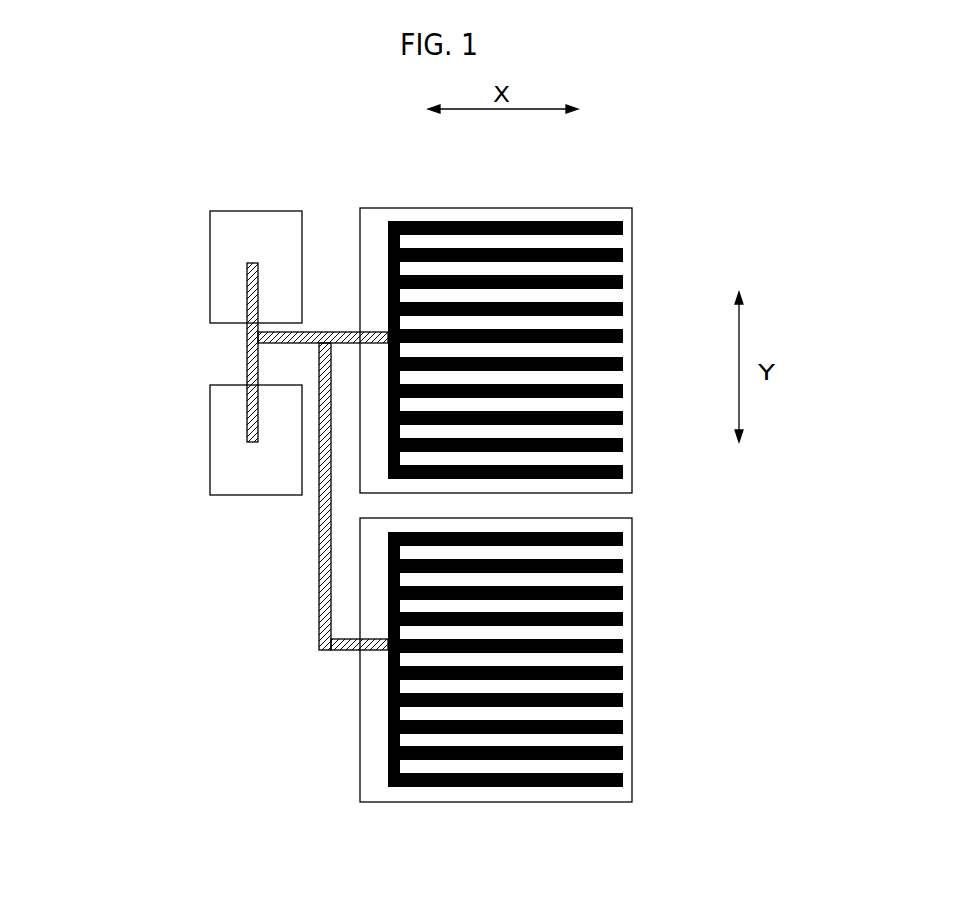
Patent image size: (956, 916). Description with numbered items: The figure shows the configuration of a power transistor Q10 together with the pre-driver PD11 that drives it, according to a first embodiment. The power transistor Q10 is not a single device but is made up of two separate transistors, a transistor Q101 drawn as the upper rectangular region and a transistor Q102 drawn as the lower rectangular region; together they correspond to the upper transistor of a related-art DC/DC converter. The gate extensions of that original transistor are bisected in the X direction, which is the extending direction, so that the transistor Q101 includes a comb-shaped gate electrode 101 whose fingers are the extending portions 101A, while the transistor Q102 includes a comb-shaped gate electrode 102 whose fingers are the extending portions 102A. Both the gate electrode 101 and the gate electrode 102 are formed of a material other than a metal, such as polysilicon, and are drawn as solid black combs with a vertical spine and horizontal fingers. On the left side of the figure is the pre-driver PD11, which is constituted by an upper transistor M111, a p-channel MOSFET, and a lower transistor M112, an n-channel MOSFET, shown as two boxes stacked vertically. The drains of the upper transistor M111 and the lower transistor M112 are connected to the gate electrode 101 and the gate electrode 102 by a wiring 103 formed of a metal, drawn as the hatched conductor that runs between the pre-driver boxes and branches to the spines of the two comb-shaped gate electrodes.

The pre-driver PD11 is at (230, 180).
The upper transistor M111 is at (210, 235).
The lower transistor M112 is at (210, 485).
The wiring 103 is at (247, 372).
The power transistor Q10 is at (696, 257).
The transistor Q101 is at (553, 208).
The transistor Q102 is at (520, 803).
The gate electrode 101 is at (387, 252).
The extending portions 101A is at (603, 222).
The gate electrode 102 is at (388, 760).
The extending portions 102A is at (595, 787).